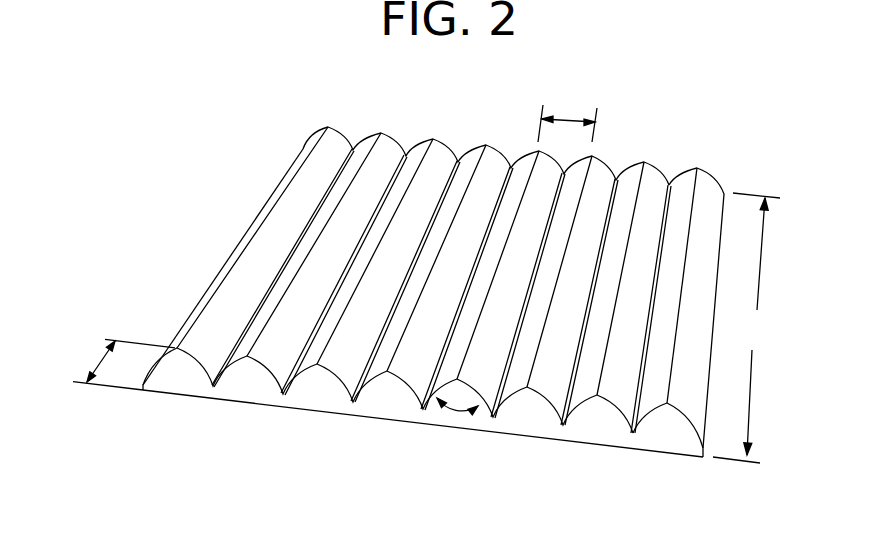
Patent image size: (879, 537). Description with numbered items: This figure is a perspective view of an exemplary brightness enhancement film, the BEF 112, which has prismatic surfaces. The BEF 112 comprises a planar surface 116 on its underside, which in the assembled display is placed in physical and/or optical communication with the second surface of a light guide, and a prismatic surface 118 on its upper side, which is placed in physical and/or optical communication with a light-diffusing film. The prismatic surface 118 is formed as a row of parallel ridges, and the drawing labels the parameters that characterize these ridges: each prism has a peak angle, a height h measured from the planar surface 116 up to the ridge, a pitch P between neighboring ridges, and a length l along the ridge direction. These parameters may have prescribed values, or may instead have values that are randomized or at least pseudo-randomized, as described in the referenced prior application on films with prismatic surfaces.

The brightness enhancement film 112 is at (447, 271).
The planar surface 116 is at (380, 421).
The prismatic surface 118 is at (708, 182).
The pitch P is at (567, 117).
The height h is at (124, 364).
The length l is at (746, 328).